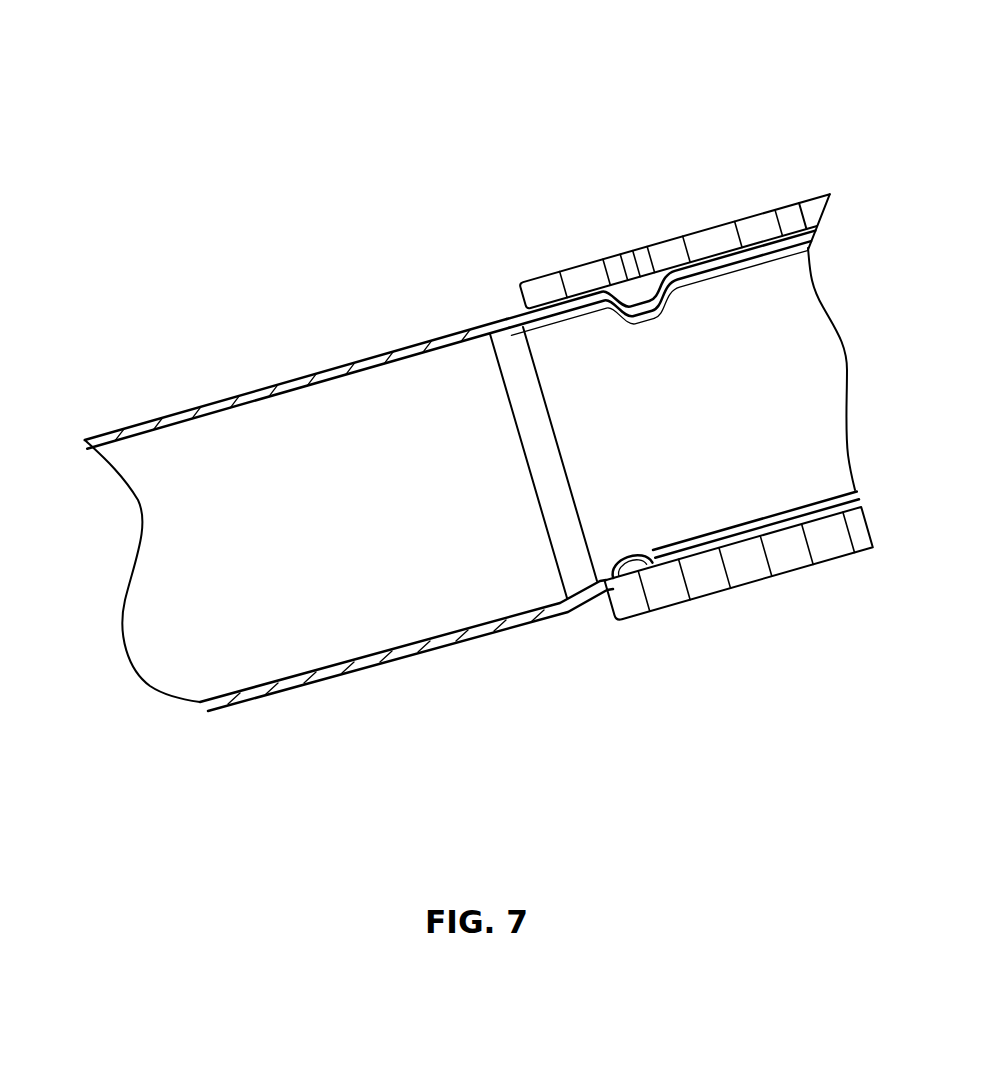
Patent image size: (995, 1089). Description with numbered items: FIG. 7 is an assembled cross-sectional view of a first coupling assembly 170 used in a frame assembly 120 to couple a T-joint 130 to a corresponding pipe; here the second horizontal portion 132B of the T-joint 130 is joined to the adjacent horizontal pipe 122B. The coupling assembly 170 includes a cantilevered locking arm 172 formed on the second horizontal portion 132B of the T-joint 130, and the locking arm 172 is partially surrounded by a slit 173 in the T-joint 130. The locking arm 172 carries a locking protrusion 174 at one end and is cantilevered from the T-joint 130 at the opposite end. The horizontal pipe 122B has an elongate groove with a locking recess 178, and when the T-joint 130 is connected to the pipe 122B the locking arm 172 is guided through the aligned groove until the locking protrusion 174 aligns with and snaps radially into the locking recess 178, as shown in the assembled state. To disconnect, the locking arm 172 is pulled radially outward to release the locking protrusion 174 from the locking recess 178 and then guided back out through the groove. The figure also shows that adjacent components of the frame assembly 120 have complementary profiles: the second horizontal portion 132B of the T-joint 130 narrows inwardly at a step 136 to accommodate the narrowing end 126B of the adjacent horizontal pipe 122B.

The frame assembly 120 is at (256, 124).
The horizontal pipe 122B is at (223, 397).
The narrowing end 126B is at (575, 616).
The T-joint 130 is at (598, 227).
The second horizontal portion 132B is at (787, 218).
The step 136 is at (657, 555).
The first coupling assembly 170 is at (667, 343).
The locking arm 172 is at (671, 254).
The slit 173 is at (629, 266).
The locking protrusion 174 is at (582, 326).
The locking recess 178 is at (731, 285).